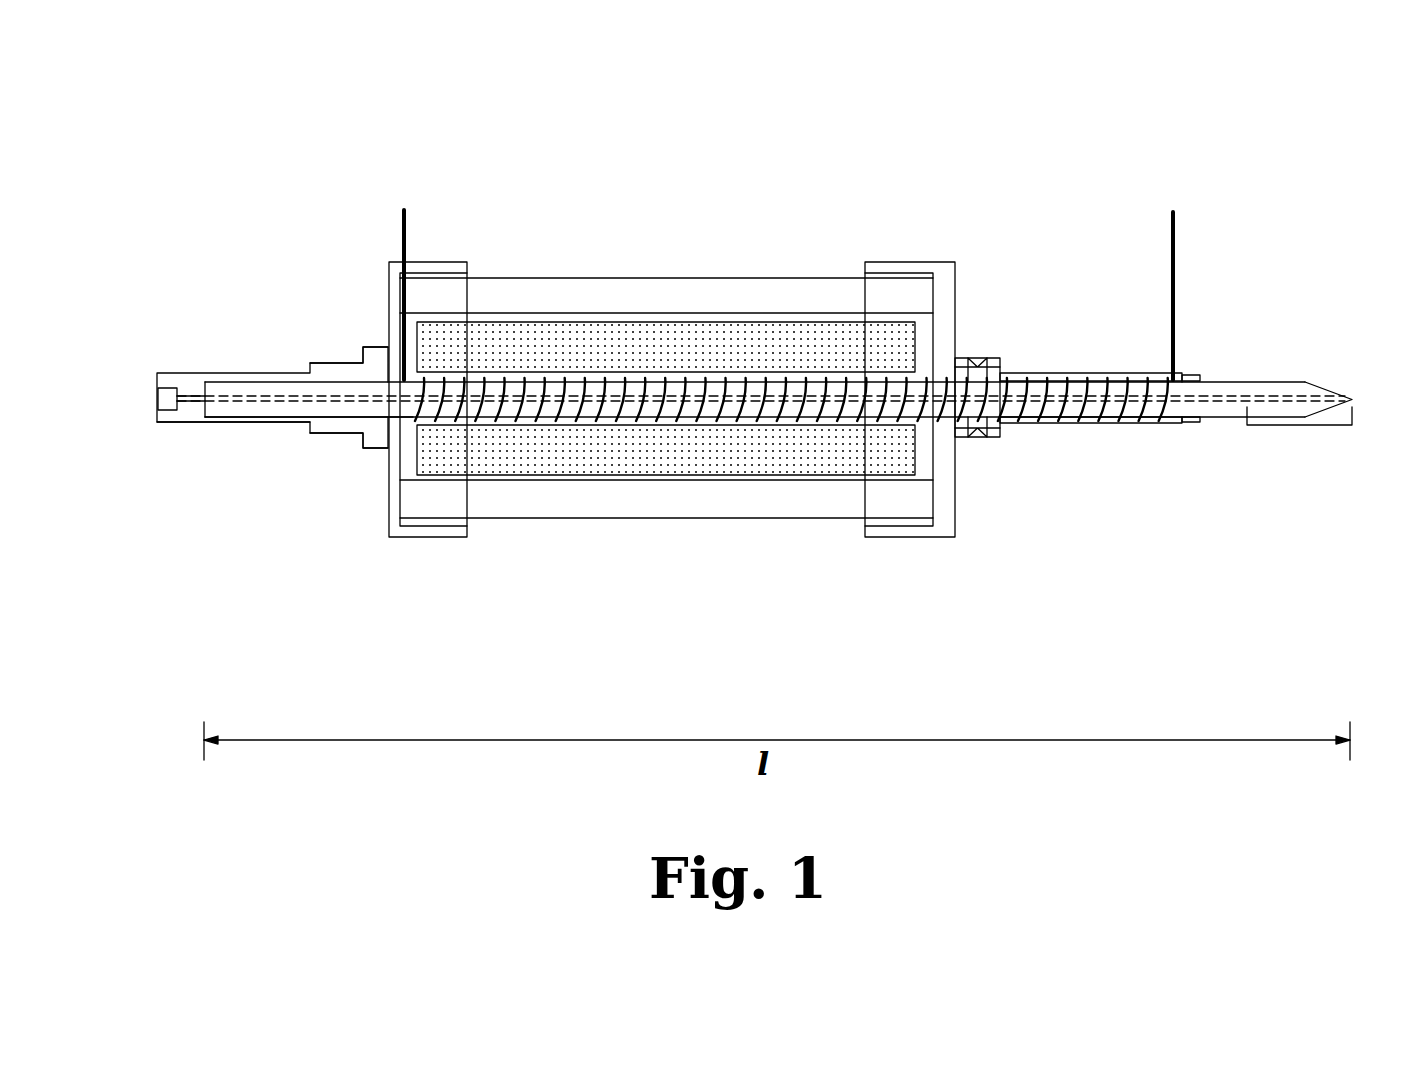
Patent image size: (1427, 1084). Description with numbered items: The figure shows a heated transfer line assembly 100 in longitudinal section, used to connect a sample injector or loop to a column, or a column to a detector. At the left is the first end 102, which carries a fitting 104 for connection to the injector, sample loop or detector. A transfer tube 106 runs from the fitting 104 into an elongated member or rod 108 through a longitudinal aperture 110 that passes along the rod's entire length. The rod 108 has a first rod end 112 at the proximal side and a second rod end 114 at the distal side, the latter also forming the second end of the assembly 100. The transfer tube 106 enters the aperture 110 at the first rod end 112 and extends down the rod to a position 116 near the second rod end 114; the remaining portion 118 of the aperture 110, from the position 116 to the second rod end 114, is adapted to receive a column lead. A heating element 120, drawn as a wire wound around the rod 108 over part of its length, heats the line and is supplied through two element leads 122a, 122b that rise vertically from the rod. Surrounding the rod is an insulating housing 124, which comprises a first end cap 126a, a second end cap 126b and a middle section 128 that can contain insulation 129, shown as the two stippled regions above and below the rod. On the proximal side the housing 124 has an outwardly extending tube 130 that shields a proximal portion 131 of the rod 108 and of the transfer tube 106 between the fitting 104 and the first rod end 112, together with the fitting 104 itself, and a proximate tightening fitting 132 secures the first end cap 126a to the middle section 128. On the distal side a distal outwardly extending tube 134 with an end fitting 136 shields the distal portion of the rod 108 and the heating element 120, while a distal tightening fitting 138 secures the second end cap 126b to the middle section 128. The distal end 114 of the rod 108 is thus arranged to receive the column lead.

The transfer line assembly 100 is at (655, 611).
The first end 102 is at (157, 382).
The fitting 104 is at (153, 400).
The transfer tube 106 is at (192, 393).
The rod 108 is at (265, 417).
The longitudinal aperture 110 is at (266, 379).
The first rod end 112 is at (203, 407).
The second rod end 114 is at (1352, 399).
The position 116 is at (1232, 412).
The portion of the aperture 118 is at (1295, 444).
The heating element 120 is at (585, 380).
The element lead 122a is at (403, 235).
The element lead 122b is at (1170, 268).
The insulating housing 124 is at (625, 216).
The first end cap 126a is at (420, 537).
The second end cap 126b is at (905, 537).
The middle section 128 is at (670, 520).
The insulation 129 is at (680, 355).
The proximal outwardly extending tube 130 is at (203, 423).
The proximal portion 131 is at (331, 364).
The proximate tightening fitting 132 is at (310, 451).
The distal outwardly extending tube 134 is at (1130, 424).
The end fitting 136 is at (1190, 376).
The distal tightening fitting 138 is at (977, 357).